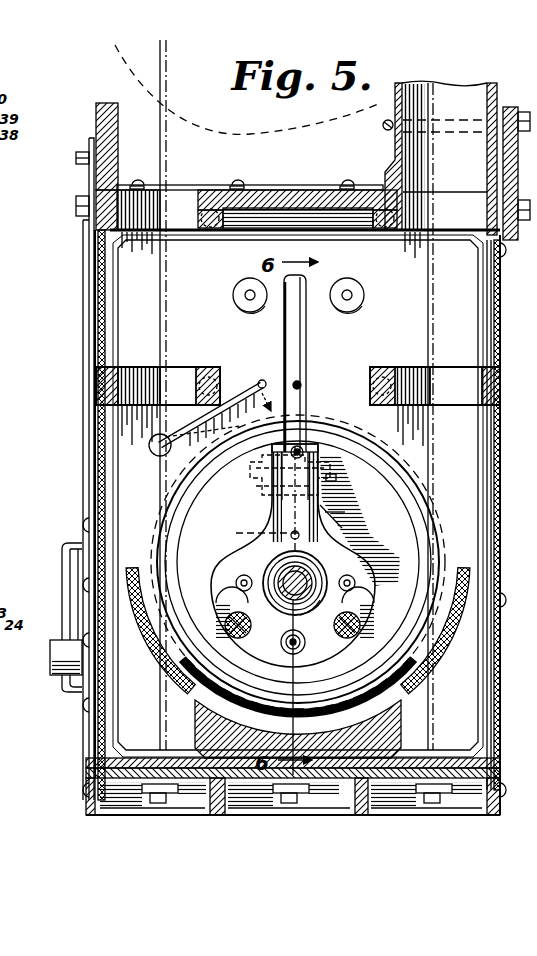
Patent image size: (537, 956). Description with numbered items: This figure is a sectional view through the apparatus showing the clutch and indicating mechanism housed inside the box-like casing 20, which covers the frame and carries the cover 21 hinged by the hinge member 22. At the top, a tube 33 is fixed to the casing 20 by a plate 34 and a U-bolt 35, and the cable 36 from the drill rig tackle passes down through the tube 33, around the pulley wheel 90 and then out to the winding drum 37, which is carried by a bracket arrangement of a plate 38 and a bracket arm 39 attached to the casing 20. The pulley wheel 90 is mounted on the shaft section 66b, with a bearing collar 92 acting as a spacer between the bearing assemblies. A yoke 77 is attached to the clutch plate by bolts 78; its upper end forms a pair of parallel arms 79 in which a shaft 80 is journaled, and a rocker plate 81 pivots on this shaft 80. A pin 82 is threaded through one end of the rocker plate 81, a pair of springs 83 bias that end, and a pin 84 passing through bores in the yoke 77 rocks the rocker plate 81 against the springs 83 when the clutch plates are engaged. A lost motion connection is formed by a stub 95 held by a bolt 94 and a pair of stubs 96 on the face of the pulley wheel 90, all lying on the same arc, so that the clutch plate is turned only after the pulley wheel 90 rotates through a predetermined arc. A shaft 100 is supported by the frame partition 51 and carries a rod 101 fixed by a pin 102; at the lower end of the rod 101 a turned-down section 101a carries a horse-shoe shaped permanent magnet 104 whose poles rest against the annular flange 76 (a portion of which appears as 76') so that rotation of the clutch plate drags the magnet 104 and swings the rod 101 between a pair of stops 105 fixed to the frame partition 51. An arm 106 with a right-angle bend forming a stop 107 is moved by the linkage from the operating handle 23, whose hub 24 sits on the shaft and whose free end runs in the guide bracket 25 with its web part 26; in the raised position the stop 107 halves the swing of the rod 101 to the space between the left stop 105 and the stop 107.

The casing 20 is at (88, 462).
The cover 21 is at (83, 268).
The hinge member 22 is at (291, 186).
The operating handle 23 is at (71, 575).
The hub 24 is at (52, 672).
The bracket 25 is at (62, 558).
The web part 26 is at (70, 602).
The tube 33 is at (473, 97).
The plate 34 is at (512, 108).
The U-bolt 35 is at (383, 126).
The cable 36 is at (170, 148).
The winding drum 37 is at (131, 60).
The plate 38 is at (90, 142).
The bracket arm 39 is at (98, 105).
The frame partition 51 is at (135, 291).
The shaft section 66b is at (291, 598).
The annular flange 76 is at (282, 562).
The ring portion 76' is at (315, 618).
The yoke 77 is at (377, 567).
The bolts 78 is at (247, 577).
The arms 79 is at (256, 506).
The shaft 80 is at (337, 480).
The rocker plate 81 is at (343, 527).
The pin 82 is at (303, 448).
The springs 83 is at (290, 451).
The pin 84 is at (255, 532).
The pulley wheel 90 is at (362, 441).
The bearing collar 92 is at (284, 592).
The bolt 94 is at (283, 645).
The stub 95 is at (305, 645).
The stubs 96 is at (237, 611).
The shaft 100 is at (311, 407).
The rod 101 is at (308, 350).
The turned-down section 101a is at (348, 513).
The pin 102 is at (301, 386).
The permanent magnet 104 is at (250, 495).
The stops 105 is at (247, 292).
The arm 106 is at (257, 396).
The stop 107 is at (262, 380).